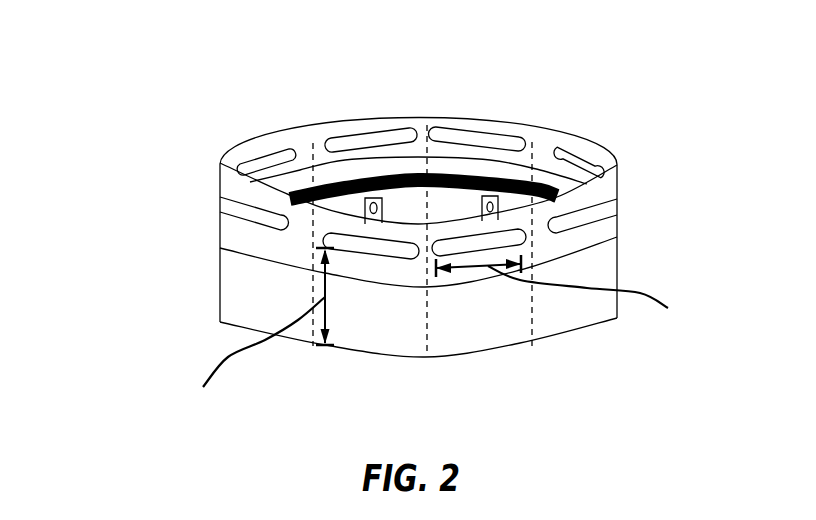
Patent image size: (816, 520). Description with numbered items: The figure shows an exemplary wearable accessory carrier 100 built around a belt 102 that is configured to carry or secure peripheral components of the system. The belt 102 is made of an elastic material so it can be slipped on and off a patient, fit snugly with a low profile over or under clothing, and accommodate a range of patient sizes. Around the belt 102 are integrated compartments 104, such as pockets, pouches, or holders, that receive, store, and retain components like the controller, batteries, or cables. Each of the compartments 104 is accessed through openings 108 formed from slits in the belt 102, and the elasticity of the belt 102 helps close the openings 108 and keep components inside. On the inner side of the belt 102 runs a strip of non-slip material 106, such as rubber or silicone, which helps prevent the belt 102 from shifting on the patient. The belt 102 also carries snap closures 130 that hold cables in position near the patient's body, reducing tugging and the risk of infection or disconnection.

The wearable accessory carrier 100 is at (173, 130).
The belt 102 is at (567, 142).
The compartments 104 is at (378, 128).
The strip of non-slip material 106 is at (502, 180).
The openings 108 is at (284, 157).
The snap closures 130 is at (482, 197).